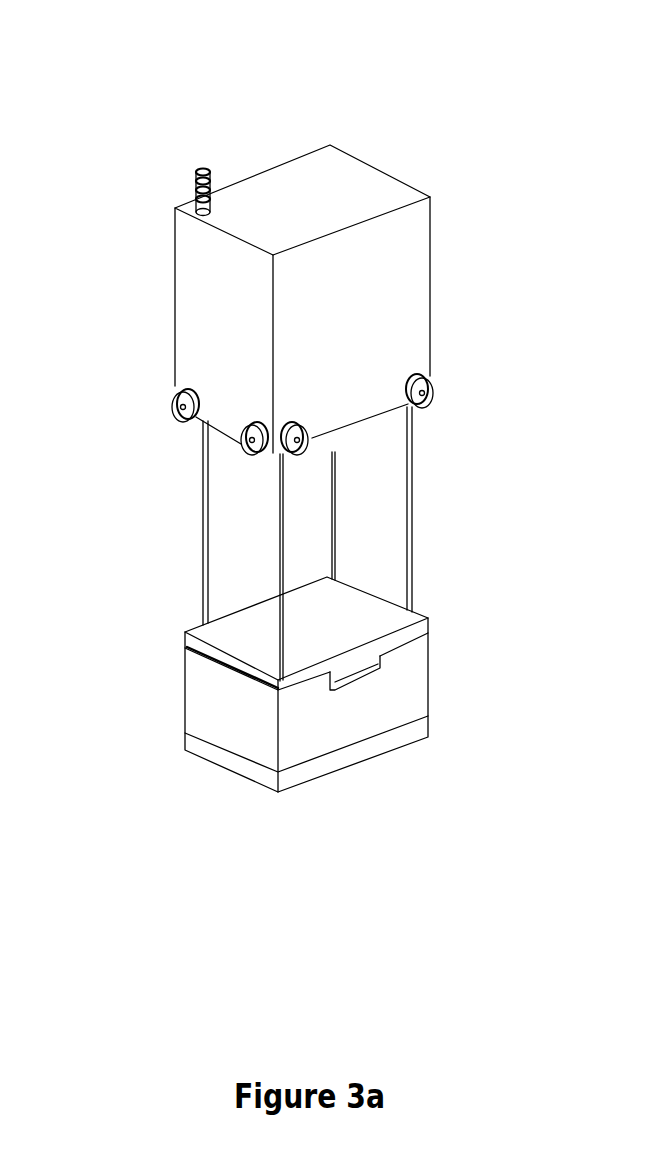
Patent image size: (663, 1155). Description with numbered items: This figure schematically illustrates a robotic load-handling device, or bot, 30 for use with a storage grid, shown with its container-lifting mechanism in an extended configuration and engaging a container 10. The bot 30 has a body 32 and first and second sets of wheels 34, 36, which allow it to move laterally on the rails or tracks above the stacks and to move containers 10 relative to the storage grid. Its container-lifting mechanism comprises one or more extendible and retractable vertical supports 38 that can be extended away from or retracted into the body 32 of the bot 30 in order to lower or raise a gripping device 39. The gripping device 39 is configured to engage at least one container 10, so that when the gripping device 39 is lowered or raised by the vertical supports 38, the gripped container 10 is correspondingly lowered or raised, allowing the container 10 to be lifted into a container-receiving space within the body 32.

The robotic load-handling device 30 is at (150, 108).
The body 32 is at (373, 279).
The first set of wheels 34 is at (424, 393).
The second set of wheels 36 is at (178, 396).
The vertical supports 38 is at (410, 515).
The gripping device 39 is at (372, 622).
The container 10 is at (400, 703).